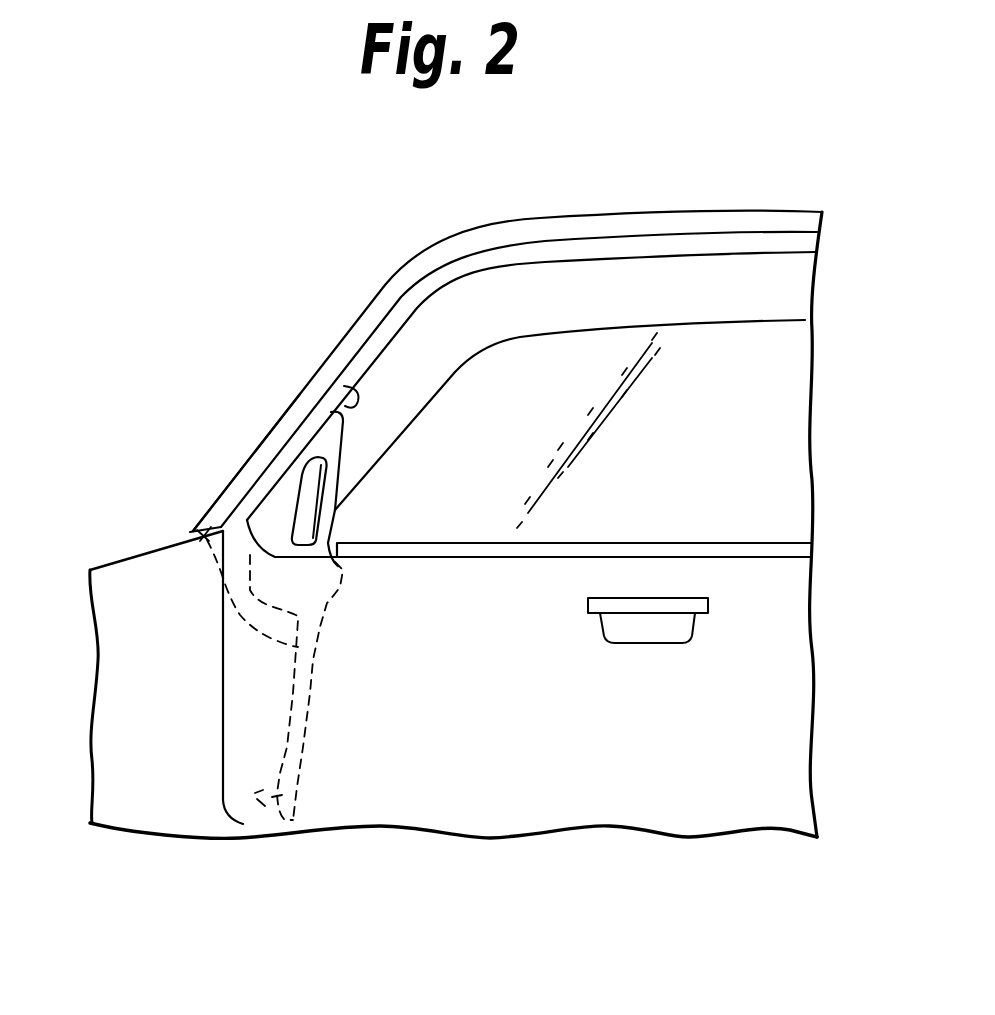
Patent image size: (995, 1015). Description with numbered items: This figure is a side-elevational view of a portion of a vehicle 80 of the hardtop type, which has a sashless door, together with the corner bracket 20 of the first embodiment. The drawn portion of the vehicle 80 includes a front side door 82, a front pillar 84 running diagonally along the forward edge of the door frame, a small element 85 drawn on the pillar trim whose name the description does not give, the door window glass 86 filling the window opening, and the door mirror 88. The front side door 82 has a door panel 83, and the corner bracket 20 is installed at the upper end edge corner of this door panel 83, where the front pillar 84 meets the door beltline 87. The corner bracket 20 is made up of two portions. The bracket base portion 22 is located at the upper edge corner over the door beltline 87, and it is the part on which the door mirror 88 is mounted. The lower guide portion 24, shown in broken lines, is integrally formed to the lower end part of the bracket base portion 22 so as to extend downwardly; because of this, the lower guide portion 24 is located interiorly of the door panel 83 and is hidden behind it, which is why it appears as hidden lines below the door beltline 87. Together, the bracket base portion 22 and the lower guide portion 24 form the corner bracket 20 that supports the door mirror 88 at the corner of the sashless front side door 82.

The corner bracket 20 is at (125, 443).
The bracket base portion 22 is at (258, 498).
The lower guide portion 24 is at (190, 527).
The vehicle 80 is at (612, 208).
The front side door 82 is at (434, 806).
The door panel 83 is at (243, 703).
The front pillar 84 is at (380, 307).
The clip 85 is at (353, 390).
The door window glass 86 is at (800, 373).
The door beltline 87 is at (793, 550).
The door mirror 88 is at (297, 473).